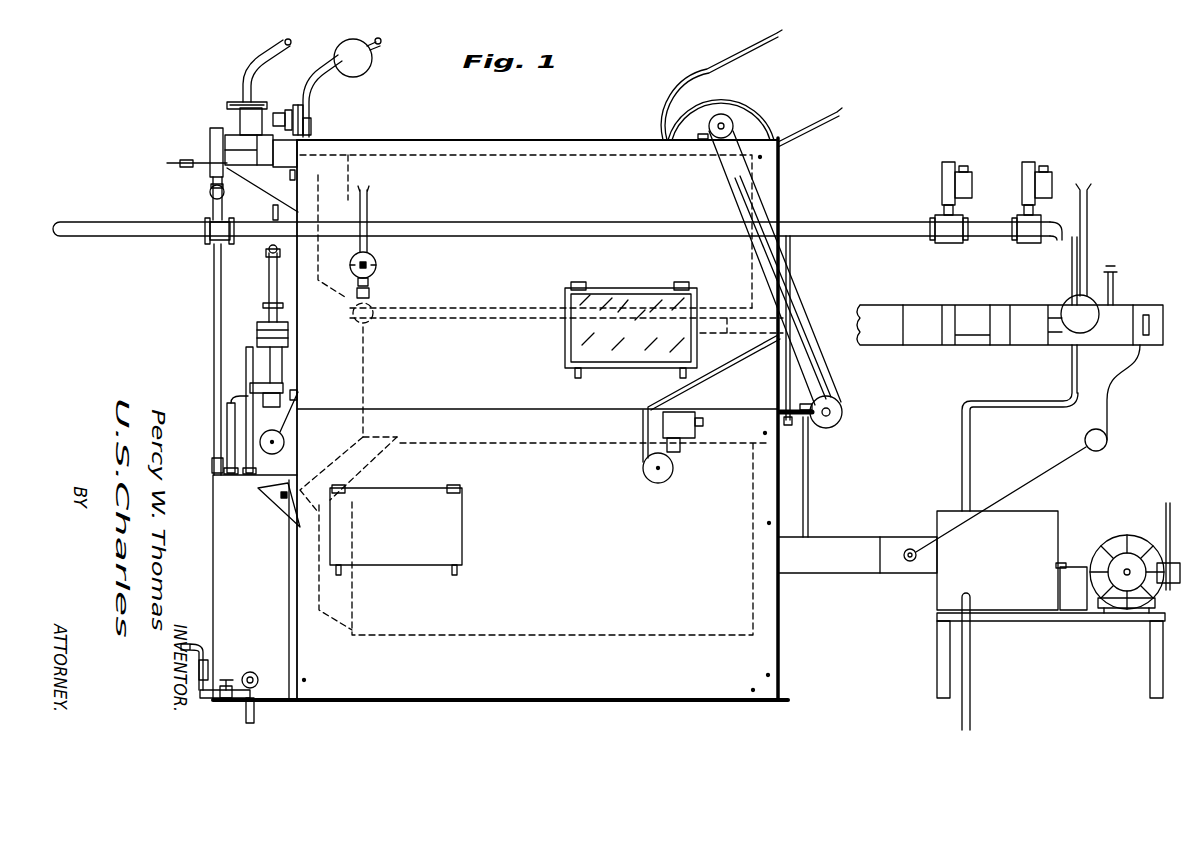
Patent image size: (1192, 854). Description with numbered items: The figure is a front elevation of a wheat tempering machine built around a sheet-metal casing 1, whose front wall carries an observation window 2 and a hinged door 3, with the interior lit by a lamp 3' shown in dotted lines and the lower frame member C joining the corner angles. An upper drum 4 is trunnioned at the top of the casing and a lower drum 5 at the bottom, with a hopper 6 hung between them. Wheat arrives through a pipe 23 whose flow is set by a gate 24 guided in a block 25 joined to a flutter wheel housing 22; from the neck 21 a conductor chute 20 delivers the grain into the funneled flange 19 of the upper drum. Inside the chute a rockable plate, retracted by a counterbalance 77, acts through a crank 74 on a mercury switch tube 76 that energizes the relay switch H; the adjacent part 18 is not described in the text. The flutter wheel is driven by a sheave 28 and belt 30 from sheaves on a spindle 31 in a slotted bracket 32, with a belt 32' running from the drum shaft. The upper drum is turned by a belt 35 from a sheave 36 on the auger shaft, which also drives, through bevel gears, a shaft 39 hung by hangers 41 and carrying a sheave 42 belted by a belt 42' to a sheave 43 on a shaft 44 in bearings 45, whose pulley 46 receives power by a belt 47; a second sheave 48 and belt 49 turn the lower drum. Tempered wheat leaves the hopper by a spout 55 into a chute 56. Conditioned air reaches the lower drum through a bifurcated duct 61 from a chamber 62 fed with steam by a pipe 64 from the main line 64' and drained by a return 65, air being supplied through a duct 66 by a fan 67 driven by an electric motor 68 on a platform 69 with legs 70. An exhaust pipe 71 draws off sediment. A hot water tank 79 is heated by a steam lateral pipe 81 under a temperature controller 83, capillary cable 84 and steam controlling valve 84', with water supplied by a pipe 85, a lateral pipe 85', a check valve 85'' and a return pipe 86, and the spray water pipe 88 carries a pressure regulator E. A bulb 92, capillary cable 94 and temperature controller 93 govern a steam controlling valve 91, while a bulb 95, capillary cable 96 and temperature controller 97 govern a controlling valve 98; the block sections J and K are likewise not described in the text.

The casing 1 is at (500, 419).
The observation window 2 is at (623, 300).
The hingedly connected door 3 is at (396, 530).
The lamp 3' is at (375, 254).
The drum 4 is at (596, 170).
The drum 5 is at (590, 632).
The hopper 6 is at (380, 372).
The rod 18 is at (178, 163).
The annular funneled flange 19 is at (325, 175).
The conductor chute 20 is at (322, 190).
The neck 21 is at (233, 137).
The flutter wheel housing 22 is at (240, 125).
The pipe 23 is at (265, 62).
The gate 24 is at (240, 112).
The block 25 is at (242, 103).
The sheave 28 is at (280, 112).
The belt 30 is at (312, 98).
The spindle 31 is at (300, 120).
The slotted bracket 32 is at (327, 121).
The belt 32' is at (260, 209).
The belt 35 is at (791, 250).
The sheave 36 is at (778, 408).
The shaft 39 is at (832, 418).
The hangers 41 is at (800, 420).
The sheave 42 is at (844, 401).
The belt 42' is at (751, 217).
The sheave 43 is at (730, 117).
The shaft 44 is at (728, 126).
The bearings 45 is at (700, 134).
The pulley 46 is at (740, 85).
The belt 47 is at (805, 126).
The sheave 48 is at (812, 425).
The belt 49 is at (809, 502).
The spout 55 is at (365, 462).
The chute 56 is at (290, 485).
The bifurcated duct 61 is at (852, 538).
The chamber 62 is at (997, 560).
The pipe 64 is at (1020, 428).
The main line 64' is at (565, 249).
The return 65 is at (972, 662).
The duct 66 is at (1072, 568).
The fan 67 is at (1131, 537).
The electric motor 68 is at (1128, 580).
The platform 69 is at (1075, 622).
The legs 70 is at (937, 660).
The exhaust pipe 71 is at (372, 60).
The crank 74 is at (230, 176).
The rockable switch tube 76 is at (297, 157).
The counterbalance 77 is at (190, 160).
The hot water tank 79 is at (255, 587).
The steam lateral pipe 81 is at (213, 293).
The temperature controller 83 is at (247, 363).
The capillary cable 84 is at (298, 420).
The steam controlling valve 84' is at (199, 188).
The pipe 85 is at (215, 659).
The lateral pipe 85' is at (241, 670).
The check valve 85'' is at (205, 726).
The pipe 86 is at (248, 710).
The water pipe 88 is at (288, 305).
The steam controlling valve 91 is at (942, 180).
The bulb 92 is at (722, 312).
The temperature controller 93 is at (703, 428).
The capillary cable 94 is at (716, 376).
The bulb 95 is at (908, 548).
The capillary cable 96 is at (1053, 475).
The temperature controller 97 is at (1145, 312).
The controlling valve 98 is at (1046, 180).
The frame member C is at (634, 703).
The water pressure regulator E is at (240, 400).
The relay switch H is at (916, 312).
The valve section J is at (1026, 312).
The valve section K is at (966, 312).